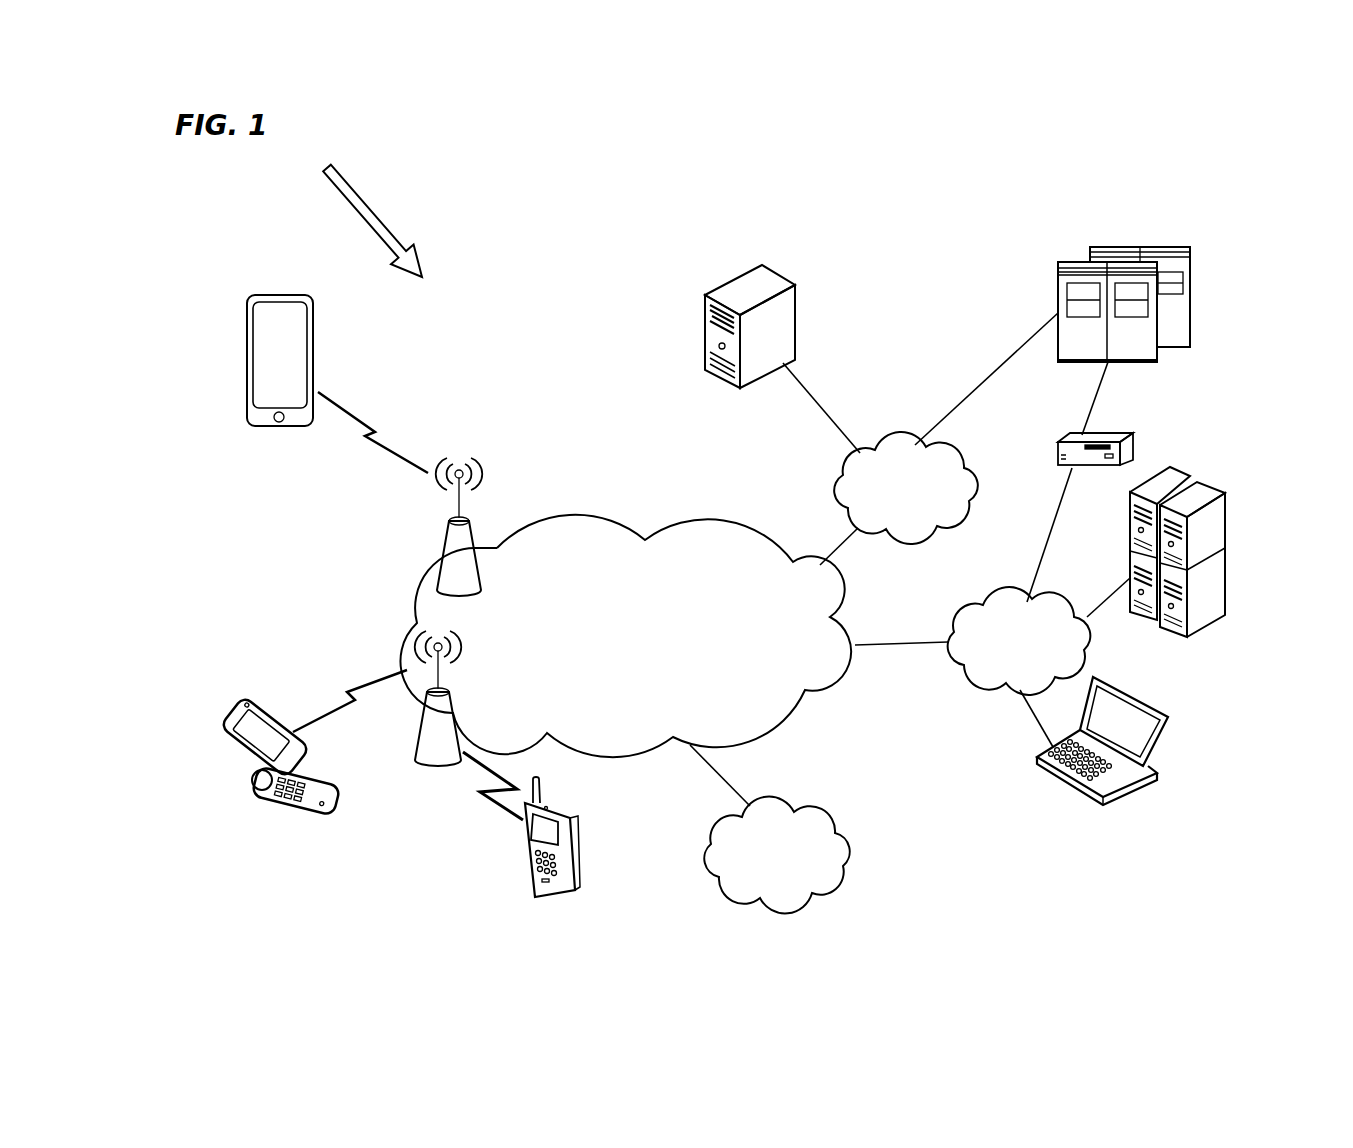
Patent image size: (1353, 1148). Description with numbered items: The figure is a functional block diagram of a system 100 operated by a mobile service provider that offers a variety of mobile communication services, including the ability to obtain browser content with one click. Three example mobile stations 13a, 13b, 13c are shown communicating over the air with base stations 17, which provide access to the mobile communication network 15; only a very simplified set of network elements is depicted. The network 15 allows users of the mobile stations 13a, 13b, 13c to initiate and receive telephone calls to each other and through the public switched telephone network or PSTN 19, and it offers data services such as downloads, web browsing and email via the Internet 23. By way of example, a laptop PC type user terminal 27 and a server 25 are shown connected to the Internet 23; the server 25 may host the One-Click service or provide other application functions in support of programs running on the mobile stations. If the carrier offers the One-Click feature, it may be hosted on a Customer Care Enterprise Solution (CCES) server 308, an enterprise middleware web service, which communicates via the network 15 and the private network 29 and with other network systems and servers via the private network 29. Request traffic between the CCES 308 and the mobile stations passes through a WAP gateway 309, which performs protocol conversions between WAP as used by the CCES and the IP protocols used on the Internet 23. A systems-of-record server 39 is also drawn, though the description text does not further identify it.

The system 100 is at (360, 214).
The mobile station 13a is at (225, 728).
The mobile station 13b is at (246, 338).
The mobile station 13c is at (577, 838).
The mobile communication network 15 is at (532, 520).
The base station 17 is at (447, 540).
The public switched telephone network (PSTN) 19 is at (848, 838).
The Internet 23 is at (968, 678).
The server 25 is at (1130, 555).
The laptop PC type user terminal 27 is at (1063, 789).
The private network 29 is at (912, 442).
The systems of record 39 is at (705, 335).
The Customer Care Enterprise Solution (CCES) server 308 is at (1190, 295).
The WAP gateway 309 is at (1068, 437).